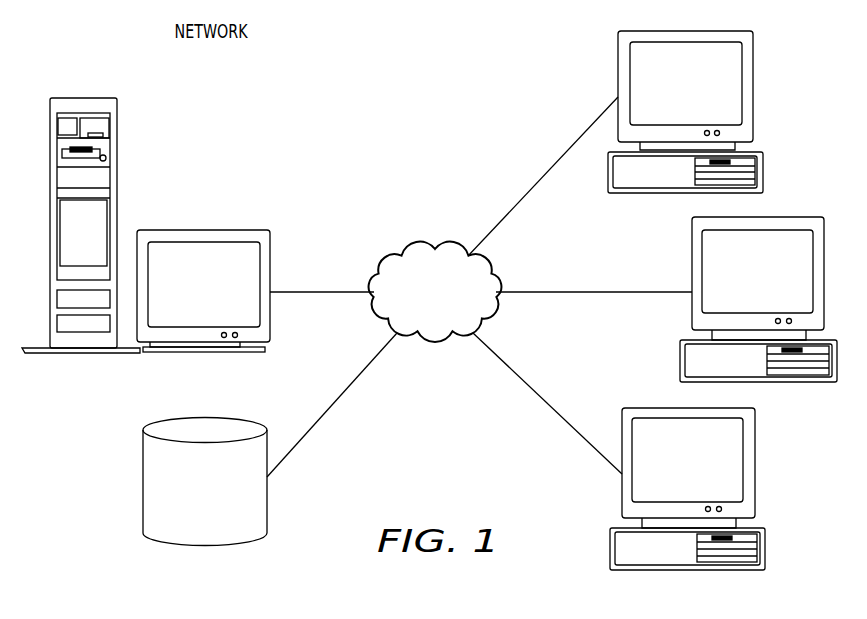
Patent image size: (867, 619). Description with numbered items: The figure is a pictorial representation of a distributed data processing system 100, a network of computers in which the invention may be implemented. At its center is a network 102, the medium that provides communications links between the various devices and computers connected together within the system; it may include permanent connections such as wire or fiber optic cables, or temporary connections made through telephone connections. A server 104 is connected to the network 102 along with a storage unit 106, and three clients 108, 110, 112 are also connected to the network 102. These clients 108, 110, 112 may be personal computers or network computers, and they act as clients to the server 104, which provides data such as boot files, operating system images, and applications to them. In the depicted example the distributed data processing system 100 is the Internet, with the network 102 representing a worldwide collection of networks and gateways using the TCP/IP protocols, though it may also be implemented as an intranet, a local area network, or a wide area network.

The distributed data processing system 100 is at (340, 76).
The network 102 is at (418, 302).
The server 104 is at (188, 294).
The storage unit 106 is at (190, 504).
The client 108 is at (669, 97).
The client 110 is at (742, 286).
The client 112 is at (673, 474).